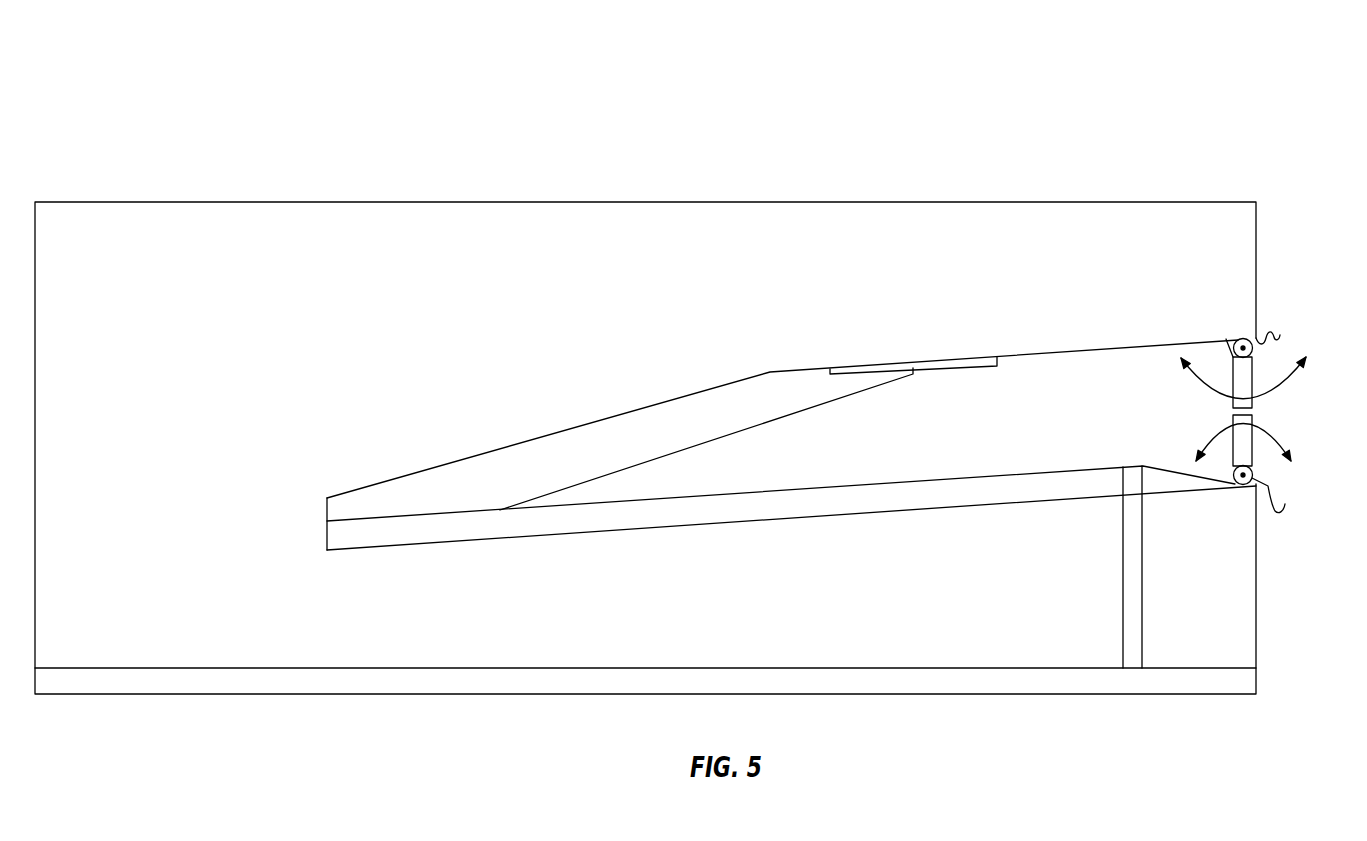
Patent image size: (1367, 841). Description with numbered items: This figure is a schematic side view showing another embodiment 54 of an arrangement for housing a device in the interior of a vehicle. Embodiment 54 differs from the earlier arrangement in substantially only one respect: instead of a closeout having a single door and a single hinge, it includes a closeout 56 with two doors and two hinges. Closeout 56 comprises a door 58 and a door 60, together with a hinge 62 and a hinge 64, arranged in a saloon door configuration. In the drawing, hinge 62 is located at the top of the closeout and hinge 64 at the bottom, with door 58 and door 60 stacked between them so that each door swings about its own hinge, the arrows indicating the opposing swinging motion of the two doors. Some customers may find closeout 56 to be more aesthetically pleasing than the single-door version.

The embodiment 54 is at (1063, 92).
The closeout 56 is at (1313, 335).
The door 58 is at (1233, 403).
The door 60 is at (1232, 423).
The hinge 62 is at (1234, 346).
The hinge 64 is at (1260, 479).